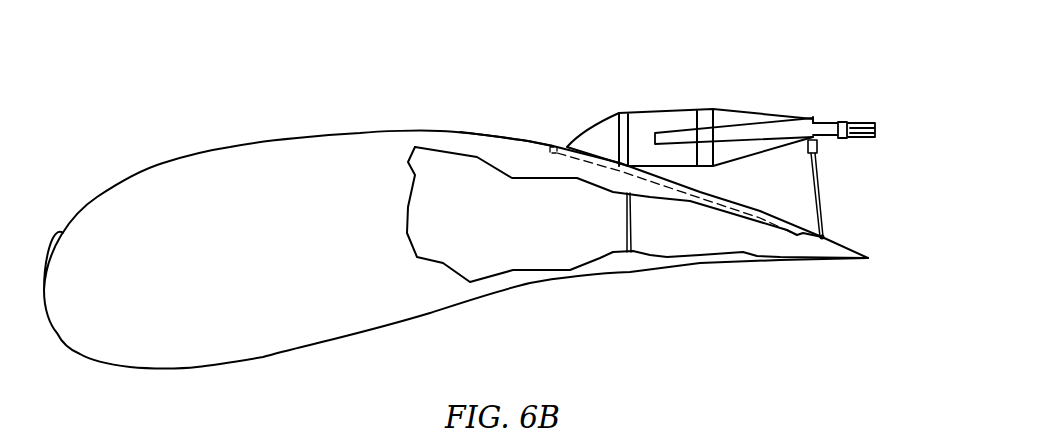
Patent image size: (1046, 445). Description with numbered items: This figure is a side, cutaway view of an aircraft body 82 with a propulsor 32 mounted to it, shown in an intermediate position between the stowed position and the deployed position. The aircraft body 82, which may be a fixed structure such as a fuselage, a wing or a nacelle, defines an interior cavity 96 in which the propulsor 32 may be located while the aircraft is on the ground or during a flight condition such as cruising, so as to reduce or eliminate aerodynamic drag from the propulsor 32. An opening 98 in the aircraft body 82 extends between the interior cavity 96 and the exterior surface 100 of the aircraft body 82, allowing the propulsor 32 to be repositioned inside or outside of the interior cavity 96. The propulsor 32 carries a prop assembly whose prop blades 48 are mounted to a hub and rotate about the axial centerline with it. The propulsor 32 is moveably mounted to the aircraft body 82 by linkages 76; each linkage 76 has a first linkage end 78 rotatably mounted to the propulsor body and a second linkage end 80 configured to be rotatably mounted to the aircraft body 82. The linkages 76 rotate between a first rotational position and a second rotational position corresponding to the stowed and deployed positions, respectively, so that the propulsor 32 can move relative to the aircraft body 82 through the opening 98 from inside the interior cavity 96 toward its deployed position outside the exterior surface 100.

The exterior surface 100 is at (455, 131).
The aircraft body 82 is at (501, 135).
The opening 98 is at (555, 145).
The propulsor 32 is at (677, 103).
The prop blades 48 is at (787, 118).
The first linkage end 78 is at (822, 150).
The linkages 76 is at (822, 197).
The second linkage end 80 is at (832, 236).
The interior cavity 96 is at (689, 235).